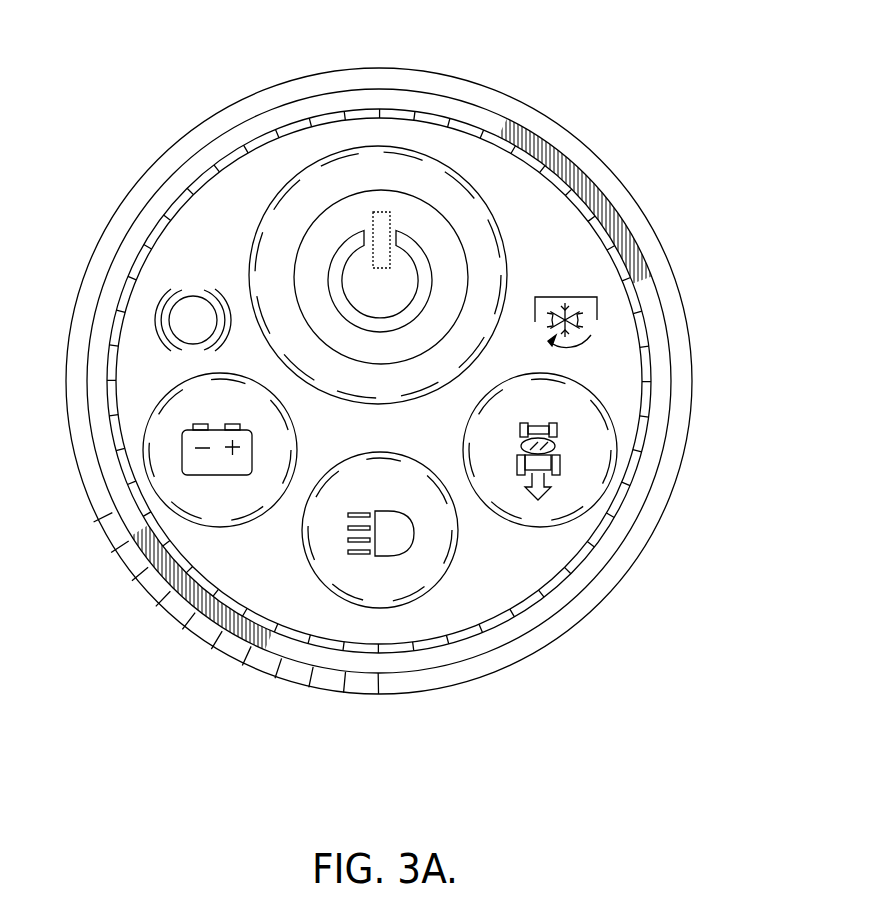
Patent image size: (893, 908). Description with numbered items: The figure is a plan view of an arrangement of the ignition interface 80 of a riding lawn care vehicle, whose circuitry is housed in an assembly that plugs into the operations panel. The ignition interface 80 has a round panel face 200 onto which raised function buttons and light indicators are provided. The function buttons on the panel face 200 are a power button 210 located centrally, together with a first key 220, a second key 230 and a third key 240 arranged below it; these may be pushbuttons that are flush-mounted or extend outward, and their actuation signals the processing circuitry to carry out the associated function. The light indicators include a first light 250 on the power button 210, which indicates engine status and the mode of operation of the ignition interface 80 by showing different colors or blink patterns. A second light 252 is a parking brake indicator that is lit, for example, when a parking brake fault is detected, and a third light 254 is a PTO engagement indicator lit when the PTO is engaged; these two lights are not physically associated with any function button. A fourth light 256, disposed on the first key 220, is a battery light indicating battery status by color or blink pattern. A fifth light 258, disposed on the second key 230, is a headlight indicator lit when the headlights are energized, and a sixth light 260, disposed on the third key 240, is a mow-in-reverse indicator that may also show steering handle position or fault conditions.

The ignition interface 80 is at (120, 42).
The panel face 200 is at (255, 600).
The power button 210 is at (293, 187).
The first key 220 is at (152, 446).
The second key 230 is at (415, 570).
The third key 240 is at (577, 500).
The first light 250 is at (378, 240).
The second light 252 is at (185, 308).
The third light 254 is at (565, 320).
The fourth light 256 is at (205, 460).
The fifth light 258 is at (377, 543).
The sixth light 260 is at (540, 448).